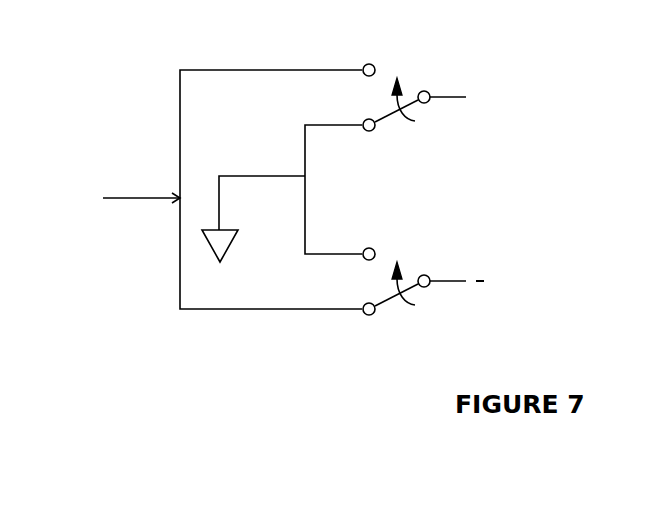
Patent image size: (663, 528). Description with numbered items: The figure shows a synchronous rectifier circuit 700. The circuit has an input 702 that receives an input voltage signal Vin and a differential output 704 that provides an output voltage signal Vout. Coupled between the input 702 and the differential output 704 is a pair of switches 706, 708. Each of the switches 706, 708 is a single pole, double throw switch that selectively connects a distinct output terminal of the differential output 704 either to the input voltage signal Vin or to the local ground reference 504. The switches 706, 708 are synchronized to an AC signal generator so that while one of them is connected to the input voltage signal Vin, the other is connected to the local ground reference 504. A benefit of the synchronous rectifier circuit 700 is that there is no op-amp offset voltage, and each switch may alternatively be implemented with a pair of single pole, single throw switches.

The synchronous rectifier circuit 700 is at (94, 45).
The input 702 is at (148, 194).
The local ground reference 504 is at (222, 222).
The differential output 704 is at (490, 167).
The switch 706 is at (398, 62).
The switch 708 is at (424, 322).